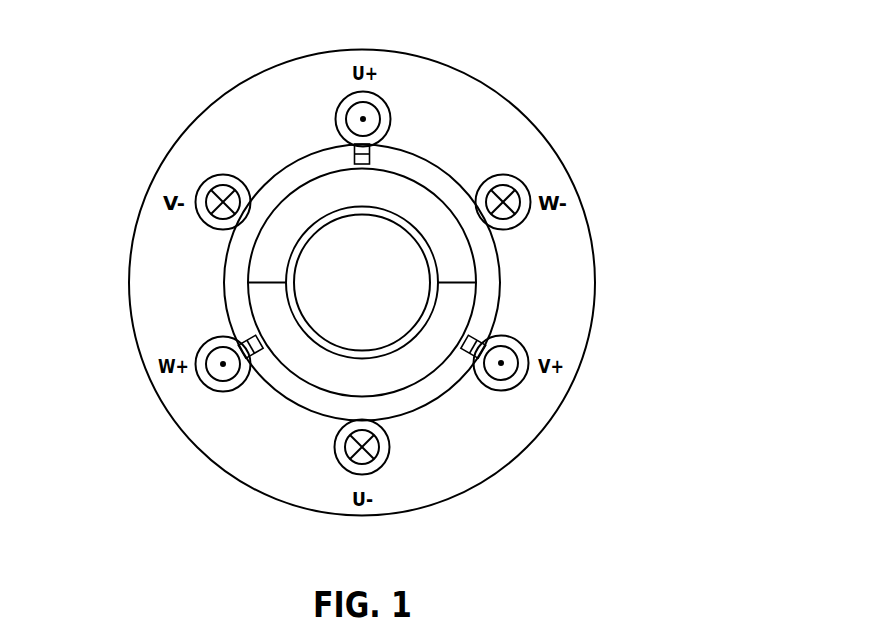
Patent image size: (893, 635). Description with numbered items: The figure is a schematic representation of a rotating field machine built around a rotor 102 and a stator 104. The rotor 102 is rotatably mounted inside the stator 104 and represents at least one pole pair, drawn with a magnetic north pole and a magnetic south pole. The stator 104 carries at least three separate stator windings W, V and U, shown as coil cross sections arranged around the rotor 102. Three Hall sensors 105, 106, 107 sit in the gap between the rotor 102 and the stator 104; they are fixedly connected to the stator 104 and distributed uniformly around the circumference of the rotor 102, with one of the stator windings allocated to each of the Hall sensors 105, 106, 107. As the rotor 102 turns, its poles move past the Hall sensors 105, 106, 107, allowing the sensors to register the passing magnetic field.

The rotor 102 is at (297, 190).
The stator 104 is at (542, 132).
The Hall sensor 105 is at (246, 340).
The Hall sensor 106 is at (483, 325).
The Hall sensor 107 is at (372, 156).